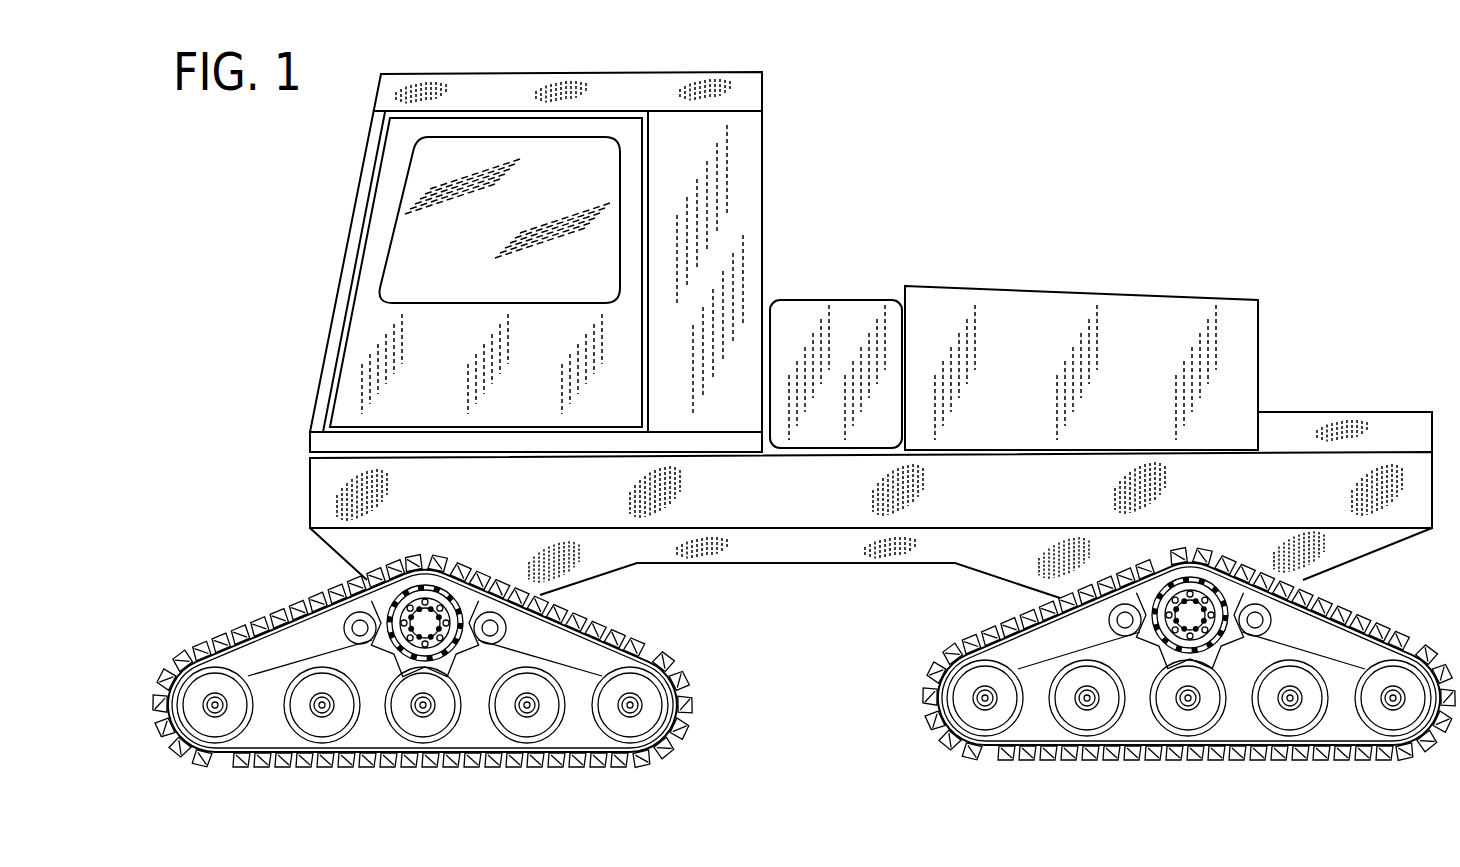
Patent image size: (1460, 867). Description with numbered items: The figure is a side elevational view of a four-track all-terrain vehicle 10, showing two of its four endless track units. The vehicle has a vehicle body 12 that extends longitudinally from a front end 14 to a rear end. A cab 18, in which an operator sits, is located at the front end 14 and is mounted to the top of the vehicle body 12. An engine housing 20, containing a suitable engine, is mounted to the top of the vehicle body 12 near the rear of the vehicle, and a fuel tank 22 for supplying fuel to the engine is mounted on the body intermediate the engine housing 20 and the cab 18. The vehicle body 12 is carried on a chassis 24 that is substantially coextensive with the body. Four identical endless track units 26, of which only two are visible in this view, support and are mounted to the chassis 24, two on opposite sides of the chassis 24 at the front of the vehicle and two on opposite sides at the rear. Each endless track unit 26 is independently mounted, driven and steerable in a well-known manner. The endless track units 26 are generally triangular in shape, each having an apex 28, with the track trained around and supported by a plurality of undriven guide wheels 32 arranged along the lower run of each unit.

The four-track all-terrain vehicle 10 is at (828, 177).
The vehicle body 12 is at (310, 495).
The front end 14 is at (340, 287).
The cab 18 is at (517, 117).
The engine housing 20 is at (1072, 288).
The fuel tank 22 is at (828, 300).
The chassis 24 is at (826, 548).
The endless track unit 26 is at (238, 607).
The apex 28 is at (424, 568).
The undriven guide wheels 32 is at (214, 725).